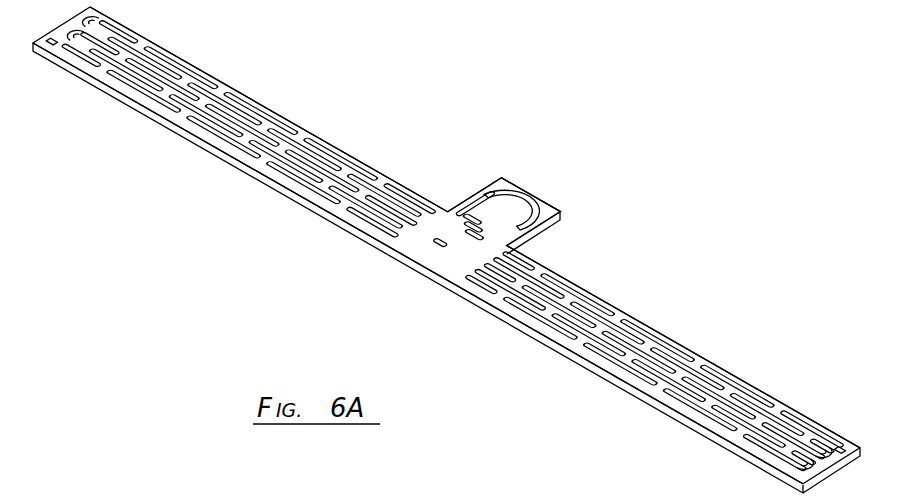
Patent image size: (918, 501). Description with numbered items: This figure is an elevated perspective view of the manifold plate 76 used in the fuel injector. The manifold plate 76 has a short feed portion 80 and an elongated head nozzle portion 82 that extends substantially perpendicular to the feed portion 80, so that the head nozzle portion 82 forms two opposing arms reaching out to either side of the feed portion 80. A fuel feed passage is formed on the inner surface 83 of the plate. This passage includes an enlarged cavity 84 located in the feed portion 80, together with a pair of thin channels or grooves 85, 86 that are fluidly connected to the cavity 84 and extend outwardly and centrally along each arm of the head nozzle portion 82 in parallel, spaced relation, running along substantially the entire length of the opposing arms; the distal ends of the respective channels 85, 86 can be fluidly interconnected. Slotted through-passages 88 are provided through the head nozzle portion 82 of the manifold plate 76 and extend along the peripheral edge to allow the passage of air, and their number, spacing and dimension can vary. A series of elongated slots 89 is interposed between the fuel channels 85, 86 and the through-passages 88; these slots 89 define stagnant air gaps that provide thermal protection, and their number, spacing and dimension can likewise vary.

The manifold plate 76 is at (707, 361).
The feed portion 80 is at (562, 216).
The head nozzle portion 82 is at (650, 398).
The inner surface 83 is at (623, 313).
The cavity 84 is at (507, 210).
The channel 85 is at (222, 104).
The channel 86 is at (215, 116).
The slotted through-passage 88 is at (128, 96).
The elongated slot 89 is at (205, 92).